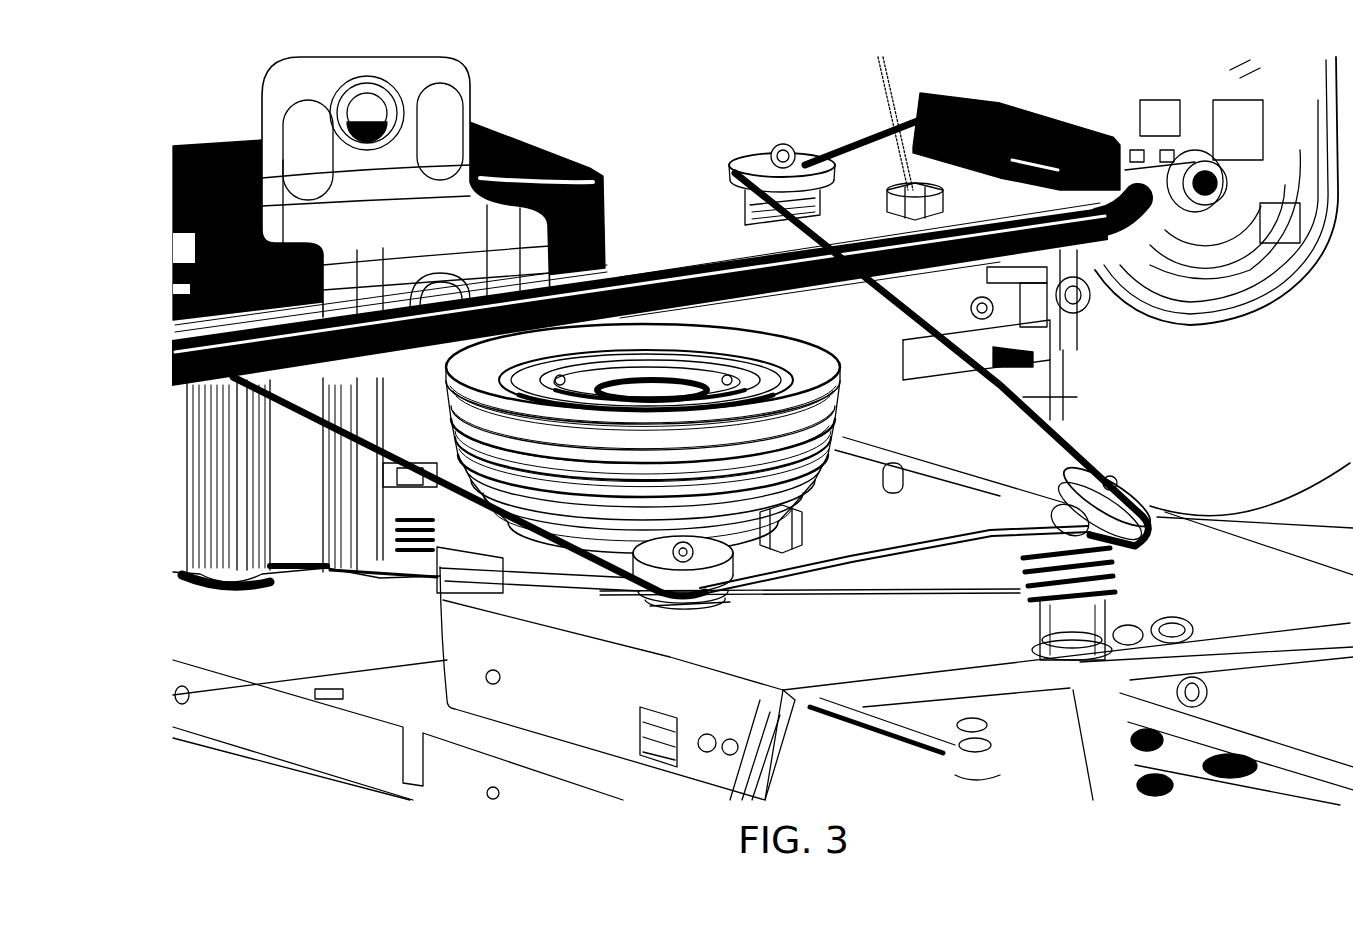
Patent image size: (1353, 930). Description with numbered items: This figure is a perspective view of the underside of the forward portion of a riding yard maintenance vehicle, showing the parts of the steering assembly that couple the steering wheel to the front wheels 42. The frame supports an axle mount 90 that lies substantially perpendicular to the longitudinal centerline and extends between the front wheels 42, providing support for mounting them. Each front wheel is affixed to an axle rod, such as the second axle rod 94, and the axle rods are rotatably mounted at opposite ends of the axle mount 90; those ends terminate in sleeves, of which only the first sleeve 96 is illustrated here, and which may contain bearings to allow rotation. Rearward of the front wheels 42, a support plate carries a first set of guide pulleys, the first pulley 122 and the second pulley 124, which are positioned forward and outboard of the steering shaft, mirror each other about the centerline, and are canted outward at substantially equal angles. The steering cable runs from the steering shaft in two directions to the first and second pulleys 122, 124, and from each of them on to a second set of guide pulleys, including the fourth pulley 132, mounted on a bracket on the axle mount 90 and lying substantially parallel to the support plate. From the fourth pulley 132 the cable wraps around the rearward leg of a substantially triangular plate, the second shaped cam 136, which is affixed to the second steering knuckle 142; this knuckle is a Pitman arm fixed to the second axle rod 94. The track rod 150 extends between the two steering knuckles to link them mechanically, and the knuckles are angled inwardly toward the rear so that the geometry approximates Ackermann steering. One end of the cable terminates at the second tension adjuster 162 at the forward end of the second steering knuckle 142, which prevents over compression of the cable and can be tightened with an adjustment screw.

The front wheels 42 is at (910, 72).
The axle mount 90 is at (869, 363).
The second axle rod 94 is at (1160, 110).
The first sleeve 96 is at (1037, 310).
The first pulley 122 is at (703, 565).
The second pulley 124 is at (1133, 490).
The fourth pulley 132 is at (755, 162).
The second shaped cam 136 is at (923, 153).
The second steering knuckle 142 is at (1113, 122).
The track rod 150 is at (752, 255).
The second tension adjuster 162 is at (1213, 187).